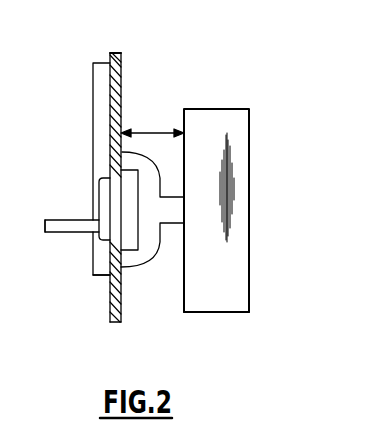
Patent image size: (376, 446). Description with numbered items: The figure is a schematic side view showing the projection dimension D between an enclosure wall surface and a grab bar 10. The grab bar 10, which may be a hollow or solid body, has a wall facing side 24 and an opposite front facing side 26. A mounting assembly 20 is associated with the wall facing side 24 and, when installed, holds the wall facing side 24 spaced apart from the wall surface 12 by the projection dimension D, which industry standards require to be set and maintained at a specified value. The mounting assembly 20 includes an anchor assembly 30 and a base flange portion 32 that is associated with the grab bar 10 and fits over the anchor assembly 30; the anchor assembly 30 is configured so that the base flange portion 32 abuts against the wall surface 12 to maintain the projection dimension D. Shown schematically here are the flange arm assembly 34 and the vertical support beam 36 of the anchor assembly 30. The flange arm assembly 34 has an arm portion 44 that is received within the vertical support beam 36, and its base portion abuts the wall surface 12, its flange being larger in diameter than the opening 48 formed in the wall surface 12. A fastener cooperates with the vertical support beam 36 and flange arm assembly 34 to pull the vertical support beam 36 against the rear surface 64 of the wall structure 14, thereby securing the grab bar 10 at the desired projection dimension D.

The grab bar 10 is at (208, 120).
The wall surface 12 is at (122, 75).
The wall structure 14 is at (116, 53).
The mounting assembly 20 is at (148, 266).
The wall facing side 24 is at (184, 305).
The front facing side 26 is at (249, 276).
The anchor assembly 30 is at (85, 232).
The base flange portion 32 is at (170, 172).
The flange arm assembly 34 is at (108, 190).
The vertical support beam 36 is at (101, 88).
The arm portion 44 is at (56, 221).
The opening 48 is at (102, 277).
The rear surface 64 is at (108, 308).
The projection dimension D is at (145, 130).